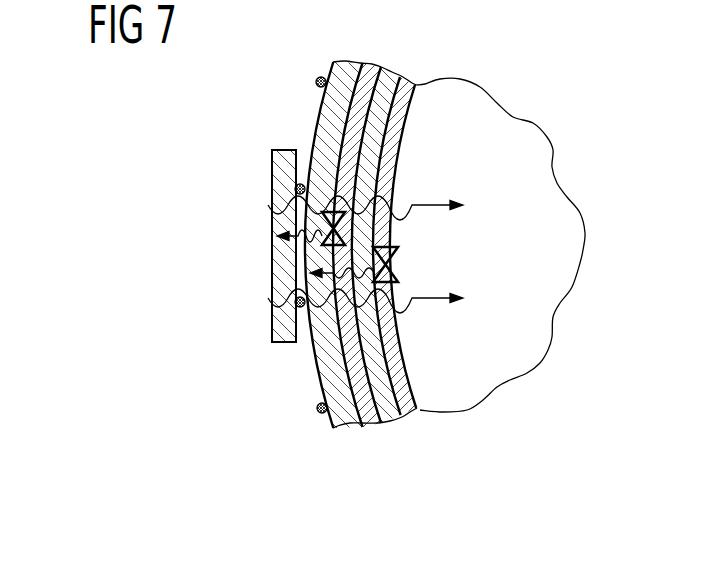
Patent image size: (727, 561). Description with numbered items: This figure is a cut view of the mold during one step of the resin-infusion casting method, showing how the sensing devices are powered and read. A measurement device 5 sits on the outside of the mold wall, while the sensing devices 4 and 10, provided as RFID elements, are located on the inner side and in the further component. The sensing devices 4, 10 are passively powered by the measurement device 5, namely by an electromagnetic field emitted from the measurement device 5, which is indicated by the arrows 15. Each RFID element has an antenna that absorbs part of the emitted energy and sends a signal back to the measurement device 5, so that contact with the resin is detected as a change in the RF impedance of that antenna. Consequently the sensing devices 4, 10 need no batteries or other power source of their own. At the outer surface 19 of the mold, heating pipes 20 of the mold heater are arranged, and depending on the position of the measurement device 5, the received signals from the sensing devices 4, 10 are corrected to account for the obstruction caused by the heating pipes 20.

The sensing device 4 is at (345, 212).
The measurement device 5 is at (283, 175).
The additional sensing device 10 is at (400, 258).
The arrows 15 is at (422, 206).
The outer surface of the mold 19 is at (314, 130).
The heating pipe 20 is at (316, 82).